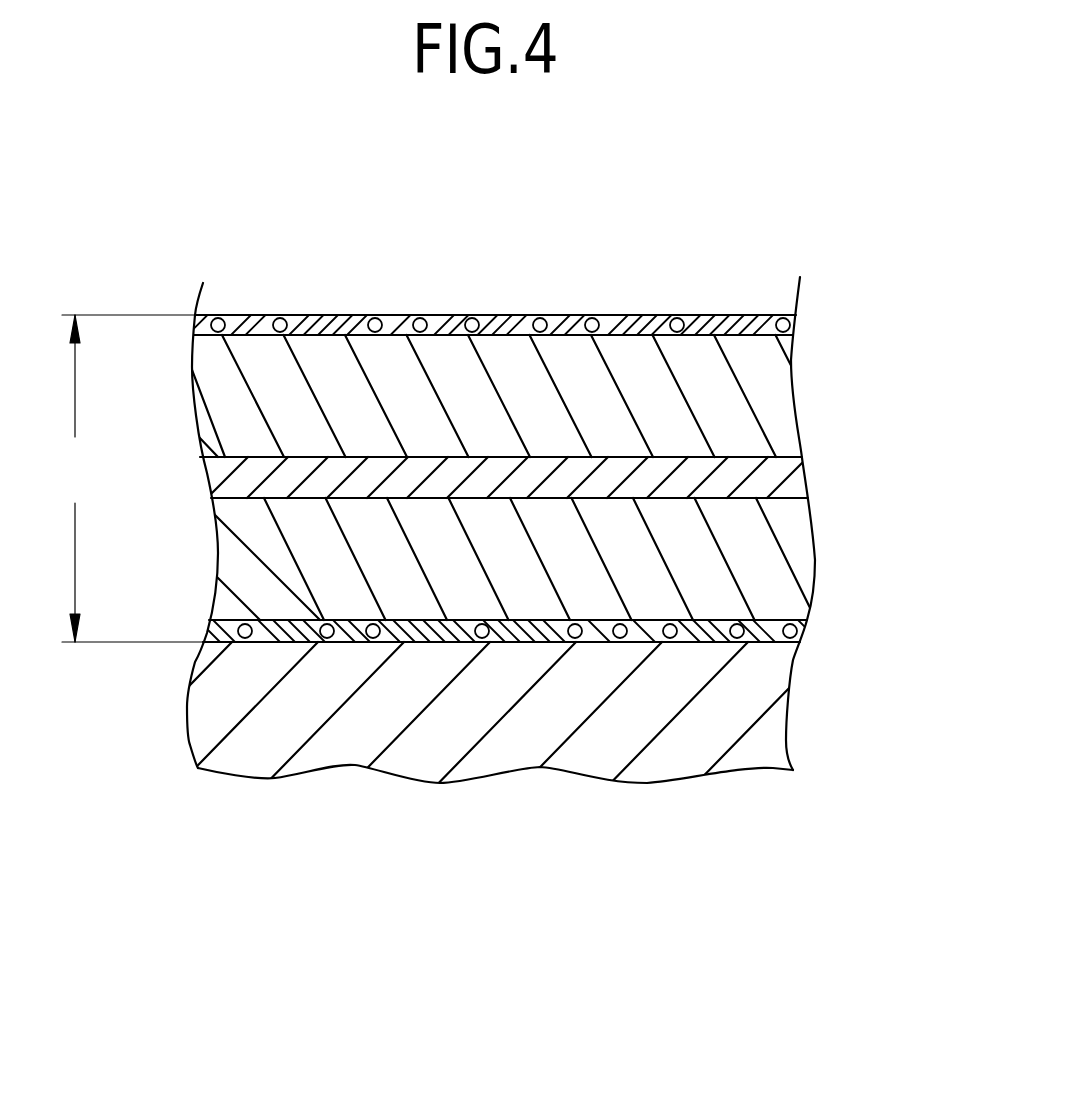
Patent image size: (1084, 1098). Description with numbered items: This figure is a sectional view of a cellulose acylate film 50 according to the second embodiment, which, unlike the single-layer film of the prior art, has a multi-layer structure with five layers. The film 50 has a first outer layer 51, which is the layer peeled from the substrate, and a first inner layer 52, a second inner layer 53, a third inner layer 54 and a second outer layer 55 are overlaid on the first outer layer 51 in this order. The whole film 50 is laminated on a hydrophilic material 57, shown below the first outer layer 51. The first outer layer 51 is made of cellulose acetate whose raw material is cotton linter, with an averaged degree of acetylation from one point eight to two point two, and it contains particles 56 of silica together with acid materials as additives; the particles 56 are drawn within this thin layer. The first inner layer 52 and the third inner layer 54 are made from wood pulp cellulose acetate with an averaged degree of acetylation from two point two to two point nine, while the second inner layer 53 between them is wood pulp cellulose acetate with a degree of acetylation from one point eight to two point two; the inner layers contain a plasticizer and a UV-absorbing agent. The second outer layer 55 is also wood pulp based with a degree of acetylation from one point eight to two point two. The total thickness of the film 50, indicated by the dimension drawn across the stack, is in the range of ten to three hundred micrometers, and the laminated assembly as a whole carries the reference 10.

The semiconductor package substrate / device 10 is at (497, 578).
The cellulose acylate film 50 is at (558, 471).
The first outer layer 51 is at (802, 626).
The first inner layer 52 is at (783, 570).
The second inner layer 53 is at (788, 479).
The third inner layer 54 is at (783, 400).
The second outer layer 55 is at (793, 326).
The particles 56 is at (548, 315).
The hydrophilic material 57 is at (503, 742).